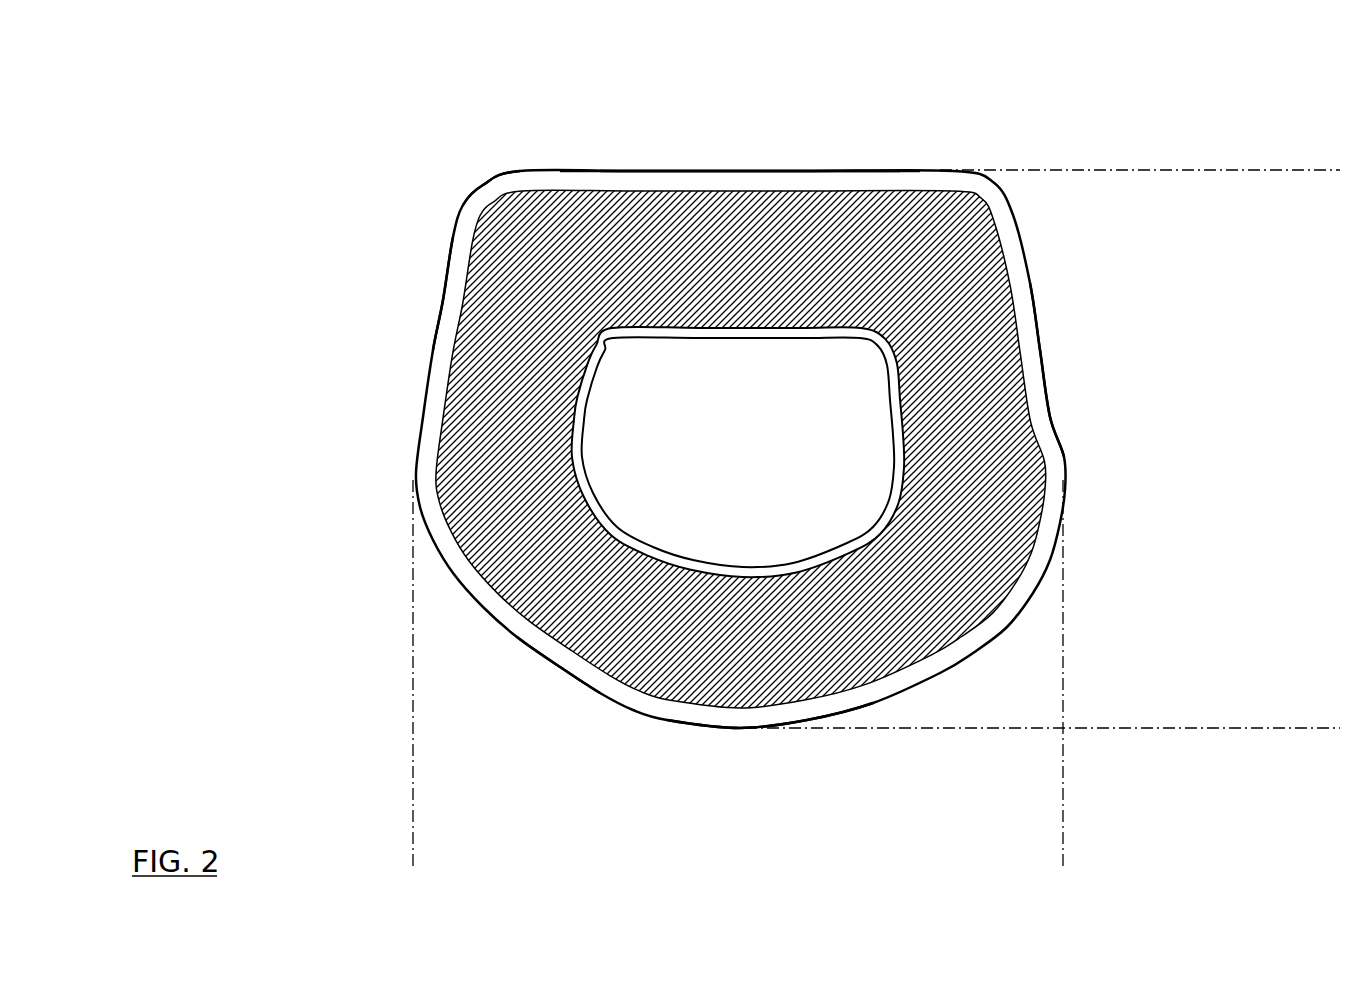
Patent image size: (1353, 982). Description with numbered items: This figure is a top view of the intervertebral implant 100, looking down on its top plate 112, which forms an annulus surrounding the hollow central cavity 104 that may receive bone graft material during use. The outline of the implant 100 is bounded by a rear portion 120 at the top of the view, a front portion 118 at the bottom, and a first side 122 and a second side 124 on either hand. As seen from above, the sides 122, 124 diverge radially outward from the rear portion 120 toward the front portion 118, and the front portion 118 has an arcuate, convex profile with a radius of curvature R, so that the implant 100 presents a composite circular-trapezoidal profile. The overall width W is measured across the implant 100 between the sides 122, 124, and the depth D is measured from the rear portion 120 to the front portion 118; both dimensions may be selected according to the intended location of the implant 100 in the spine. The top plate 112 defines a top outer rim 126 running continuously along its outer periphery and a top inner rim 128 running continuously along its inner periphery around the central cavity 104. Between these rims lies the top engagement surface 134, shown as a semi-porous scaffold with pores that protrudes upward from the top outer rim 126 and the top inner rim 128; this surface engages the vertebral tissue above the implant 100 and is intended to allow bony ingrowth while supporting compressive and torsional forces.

The intervertebral implant 100 is at (1035, 88).
The central cavity 104 is at (862, 418).
The top plate 112 is at (438, 262).
The front portion 118 is at (572, 718).
The rear portion 120 is at (790, 140).
The first side 122 is at (1088, 422).
The second side 124 is at (400, 345).
The top outer rim 126 is at (700, 178).
The top inner rim 128 is at (578, 413).
The top engagement surface 134 is at (988, 278).
The radius of curvature R is at (713, 736).
The depth D is at (1298, 181).
The width W is at (1052, 835).